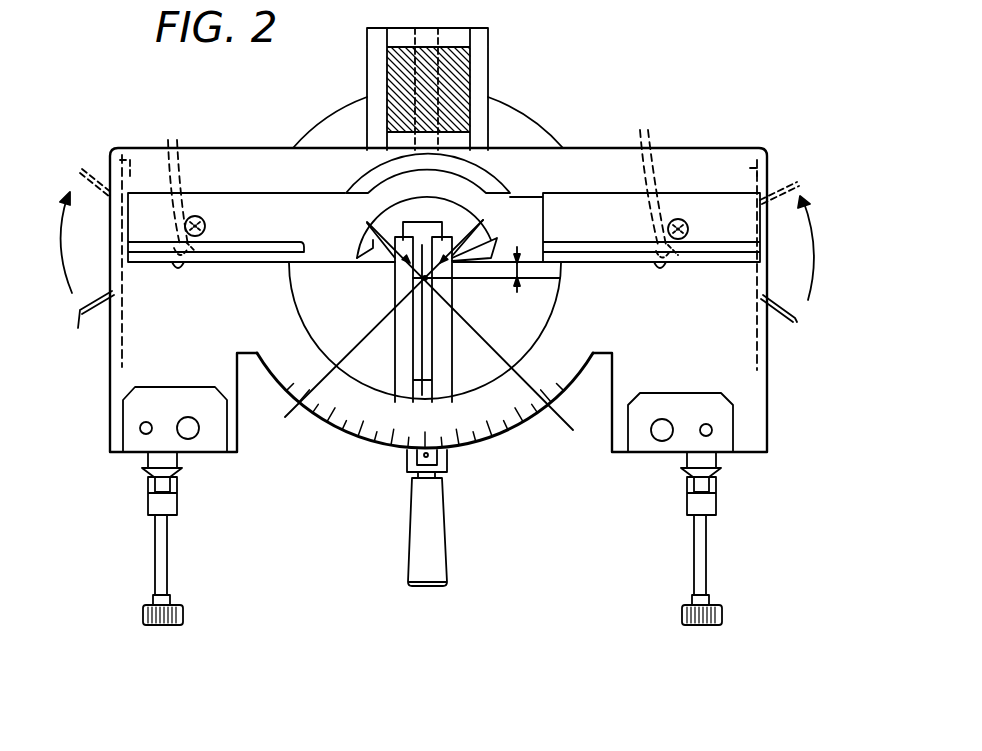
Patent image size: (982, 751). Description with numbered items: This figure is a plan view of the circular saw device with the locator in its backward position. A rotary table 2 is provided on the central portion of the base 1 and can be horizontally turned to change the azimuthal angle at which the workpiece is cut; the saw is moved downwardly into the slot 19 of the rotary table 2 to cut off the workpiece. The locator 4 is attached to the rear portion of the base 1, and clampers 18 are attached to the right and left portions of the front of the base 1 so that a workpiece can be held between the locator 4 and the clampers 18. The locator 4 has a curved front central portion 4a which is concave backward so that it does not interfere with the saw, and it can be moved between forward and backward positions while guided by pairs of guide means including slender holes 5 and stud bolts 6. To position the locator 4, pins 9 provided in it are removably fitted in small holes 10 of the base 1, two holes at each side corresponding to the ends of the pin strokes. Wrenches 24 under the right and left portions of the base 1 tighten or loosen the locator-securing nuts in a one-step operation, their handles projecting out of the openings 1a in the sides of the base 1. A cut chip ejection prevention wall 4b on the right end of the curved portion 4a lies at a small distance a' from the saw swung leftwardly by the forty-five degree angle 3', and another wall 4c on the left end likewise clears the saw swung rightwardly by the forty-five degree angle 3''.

The base 1 is at (117, 380).
The cut-out portions 1a is at (770, 165).
The rotary table 2 is at (272, 366).
The azimuthal angle 3' is at (470, 326).
The azimuthal angle 3'' is at (384, 318).
The locator 4 is at (720, 205).
The curved front central portion 4a is at (455, 190).
The cut chip ejection prevention wall 4b is at (372, 258).
The cut chip ejection prevention wall 4c is at (482, 260).
The slender holes 5 is at (661, 266).
The stud bolts 6 is at (672, 250).
The pins 9 is at (679, 219).
The small holes 10 is at (178, 132).
The clampers 18 is at (710, 530).
The slot 19 is at (430, 378).
The wrenches 24 is at (790, 325).
The small distance a' is at (497, 307).